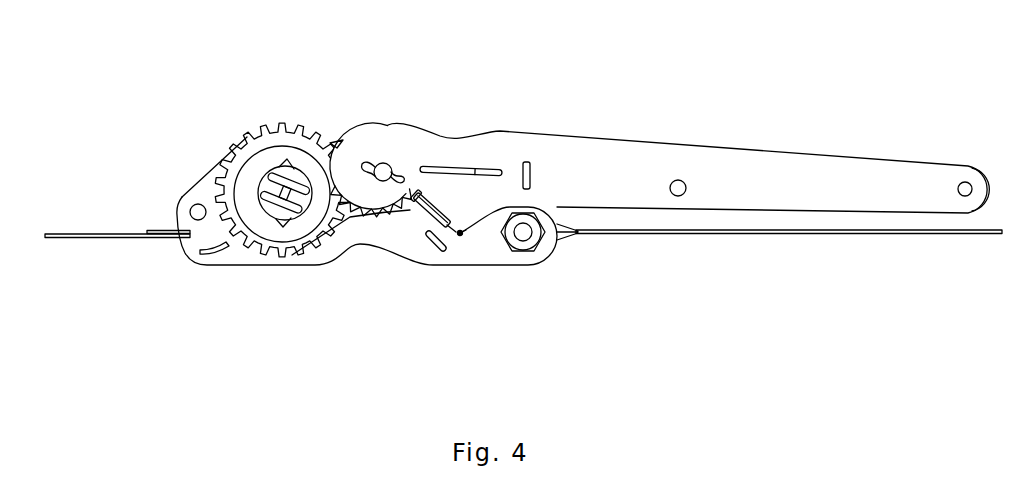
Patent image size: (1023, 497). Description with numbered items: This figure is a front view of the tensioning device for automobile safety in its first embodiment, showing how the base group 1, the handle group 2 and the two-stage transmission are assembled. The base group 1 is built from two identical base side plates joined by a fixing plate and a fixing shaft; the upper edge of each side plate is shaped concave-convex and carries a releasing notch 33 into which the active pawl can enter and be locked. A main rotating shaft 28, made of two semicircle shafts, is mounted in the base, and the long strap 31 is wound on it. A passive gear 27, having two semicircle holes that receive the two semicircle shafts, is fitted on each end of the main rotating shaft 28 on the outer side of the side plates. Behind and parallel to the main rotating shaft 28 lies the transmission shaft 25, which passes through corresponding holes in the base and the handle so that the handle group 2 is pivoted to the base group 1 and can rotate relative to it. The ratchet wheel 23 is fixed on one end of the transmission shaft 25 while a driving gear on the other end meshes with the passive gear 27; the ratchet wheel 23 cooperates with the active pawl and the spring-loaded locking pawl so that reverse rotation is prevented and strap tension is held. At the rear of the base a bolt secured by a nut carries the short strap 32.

The base group 1 is at (377, 238).
The handle group 2 is at (640, 150).
The ratchet wheel 23 is at (405, 212).
The transmission shaft 25 is at (387, 170).
The passive gear 27 is at (237, 150).
The main rotating shaft 28 is at (275, 208).
The long strap 31 is at (132, 238).
The short strap 32 is at (767, 235).
The releasing notch 33 is at (343, 140).